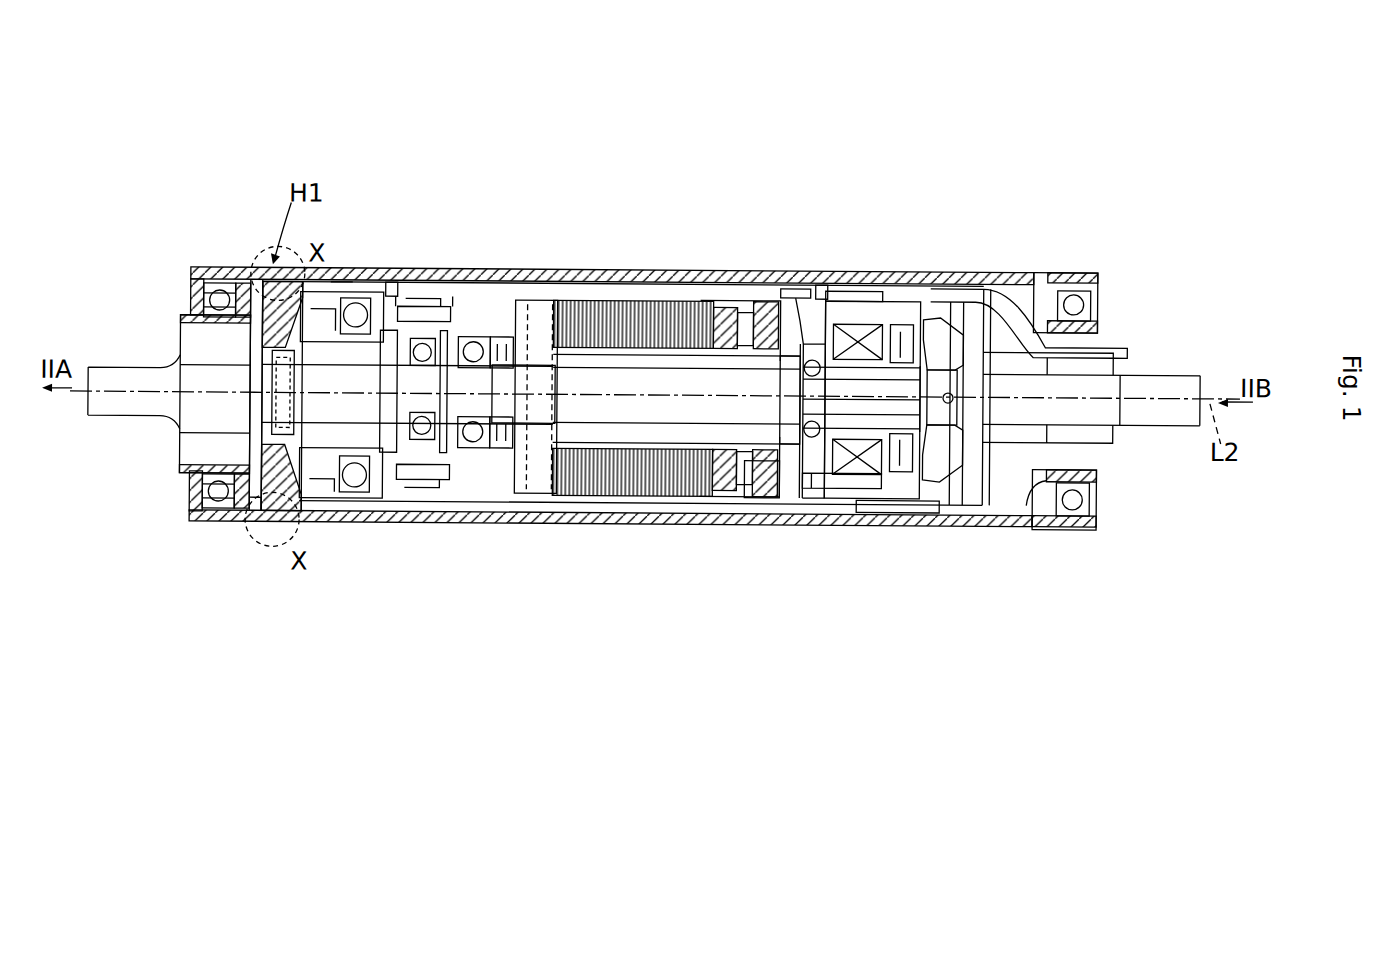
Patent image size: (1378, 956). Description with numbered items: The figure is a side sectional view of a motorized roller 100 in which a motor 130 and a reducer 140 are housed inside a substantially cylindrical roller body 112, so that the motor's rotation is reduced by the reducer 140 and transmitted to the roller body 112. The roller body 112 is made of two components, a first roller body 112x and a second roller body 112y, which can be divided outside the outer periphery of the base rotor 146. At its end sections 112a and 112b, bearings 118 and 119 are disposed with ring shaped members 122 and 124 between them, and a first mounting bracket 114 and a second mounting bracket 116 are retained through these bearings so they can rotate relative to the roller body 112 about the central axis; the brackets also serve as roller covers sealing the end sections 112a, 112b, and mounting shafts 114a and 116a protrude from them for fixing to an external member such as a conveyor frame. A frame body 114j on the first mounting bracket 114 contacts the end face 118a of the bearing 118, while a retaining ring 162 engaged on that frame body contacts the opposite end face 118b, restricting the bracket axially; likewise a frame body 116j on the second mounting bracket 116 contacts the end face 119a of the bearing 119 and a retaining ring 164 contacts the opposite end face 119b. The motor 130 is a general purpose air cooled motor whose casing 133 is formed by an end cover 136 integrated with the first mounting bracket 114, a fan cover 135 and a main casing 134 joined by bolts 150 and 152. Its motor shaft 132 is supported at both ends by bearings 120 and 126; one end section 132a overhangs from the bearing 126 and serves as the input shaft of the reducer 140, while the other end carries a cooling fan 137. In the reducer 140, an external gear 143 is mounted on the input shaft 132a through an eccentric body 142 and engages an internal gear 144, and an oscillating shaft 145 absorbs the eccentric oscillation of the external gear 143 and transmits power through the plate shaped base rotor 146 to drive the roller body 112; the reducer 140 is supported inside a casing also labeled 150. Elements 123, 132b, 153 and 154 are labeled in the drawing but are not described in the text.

The motorized roller 100 is at (728, 145).
The roller body 112 is at (587, 271).
The end section 112a is at (1073, 503).
The end section 112b is at (207, 522).
The first roller body 112x is at (254, 274).
The second roller body 112y is at (340, 276).
The first mounting bracket 114 is at (1107, 478).
The mounting shaft 114a is at (1150, 388).
The frame body 114j is at (1030, 326).
The second mounting bracket 116 is at (187, 475).
The mounting shaft 116a is at (113, 383).
The frame body 116j is at (263, 274).
The bearing 118 is at (1098, 527).
The end face 118a is at (1032, 505).
The end face 118b is at (1098, 296).
The bearing 119 is at (197, 500).
The end face 119a is at (257, 522).
The end face 119b is at (203, 313).
The bearing 120 is at (805, 290).
The ring shaped member 122 is at (1082, 270).
The spacer flange 123 is at (1113, 346).
The ring shaped member 124 is at (207, 274).
The bearing 126 is at (467, 448).
The motor 130 is at (665, 315).
The motor shaft 132 is at (635, 414).
The end section of the motor shaft 132a is at (480, 456).
The rotor shaft end 132b is at (857, 389).
The casing 133 is at (742, 632).
The main casing 134 is at (735, 505).
The fan cover 135 is at (830, 505).
The end cover 136 is at (968, 505).
The cooling fan 137 is at (942, 342).
The reducer 140 is at (466, 260).
The eccentric body 142 is at (443, 323).
The external gear 143 is at (423, 455).
The internal gear 144 is at (428, 410).
The oscillating shaft 145 is at (318, 403).
The base rotor 146 is at (267, 478).
The bolt 150 is at (548, 124).
The bolt 152 is at (387, 284).
The clutch plate 153 is at (397, 300).
The spring 154 is at (490, 320).
The retaining ring 162 is at (1098, 308).
The retaining ring 164 is at (197, 486).